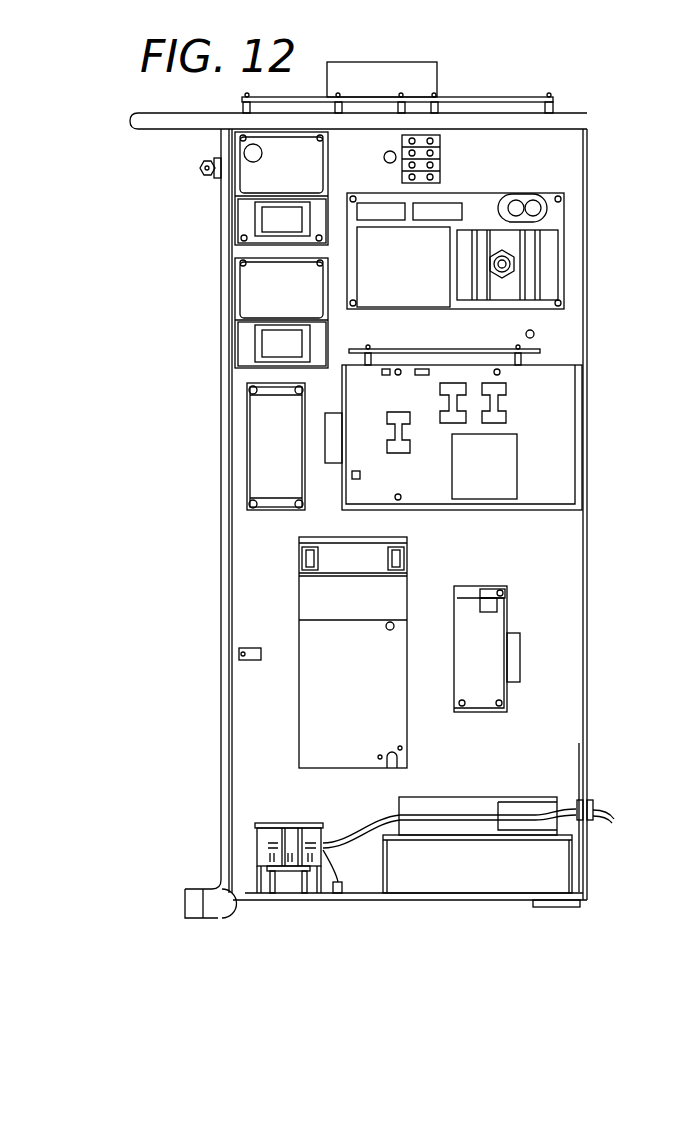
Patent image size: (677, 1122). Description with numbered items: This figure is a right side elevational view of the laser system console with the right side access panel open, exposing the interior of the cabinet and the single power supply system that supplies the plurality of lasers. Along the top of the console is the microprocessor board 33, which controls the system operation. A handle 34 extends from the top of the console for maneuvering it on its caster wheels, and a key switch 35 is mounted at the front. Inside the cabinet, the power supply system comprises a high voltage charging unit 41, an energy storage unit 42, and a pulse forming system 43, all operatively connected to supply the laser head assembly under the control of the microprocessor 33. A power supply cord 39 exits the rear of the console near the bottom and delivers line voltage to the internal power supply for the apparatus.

The microprocessor board 33 is at (546, 96).
The handle 34 is at (163, 130).
The key switch 35 is at (200, 172).
The power supply cord 39 is at (612, 818).
The high voltage charging unit 41 is at (307, 680).
The energy storage unit 42 is at (565, 477).
The pulse forming system 43 is at (548, 210).